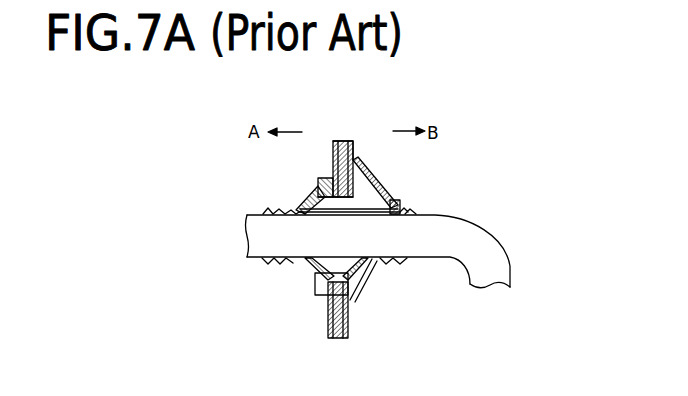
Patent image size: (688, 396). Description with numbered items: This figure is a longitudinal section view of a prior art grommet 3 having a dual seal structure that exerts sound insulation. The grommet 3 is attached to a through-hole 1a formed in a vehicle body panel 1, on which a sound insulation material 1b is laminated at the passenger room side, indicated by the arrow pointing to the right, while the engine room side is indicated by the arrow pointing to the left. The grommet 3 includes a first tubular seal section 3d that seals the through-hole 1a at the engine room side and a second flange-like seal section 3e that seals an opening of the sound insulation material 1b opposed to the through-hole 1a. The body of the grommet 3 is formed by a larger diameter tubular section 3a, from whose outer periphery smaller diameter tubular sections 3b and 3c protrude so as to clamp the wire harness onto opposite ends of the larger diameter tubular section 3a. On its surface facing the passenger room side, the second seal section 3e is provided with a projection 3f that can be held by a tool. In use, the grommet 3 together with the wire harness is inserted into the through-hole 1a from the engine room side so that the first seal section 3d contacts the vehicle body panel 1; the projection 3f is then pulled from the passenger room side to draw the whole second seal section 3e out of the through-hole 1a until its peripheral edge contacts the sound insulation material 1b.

The vehicle body panel 1 is at (333, 151).
The through-hole 1a is at (316, 276).
The sound insulation material 1b is at (348, 146).
The grommet 3 is at (318, 179).
The larger diameter tubular section 3a is at (360, 276).
The smaller diameter tubular section 3b is at (272, 266).
The smaller diameter tubular section 3c is at (412, 212).
The first tubular seal section 3d is at (318, 185).
The second flange-like seal section 3e is at (370, 177).
The projection 3f is at (401, 198).